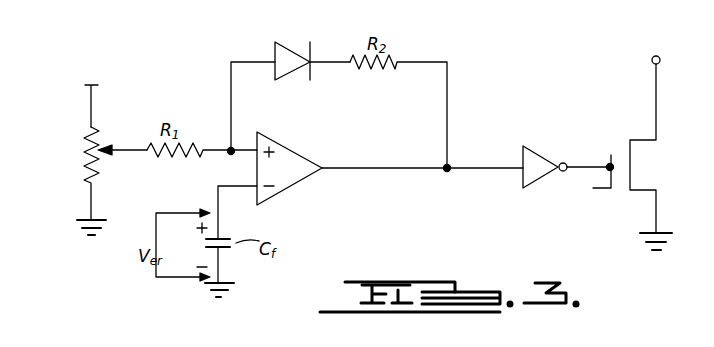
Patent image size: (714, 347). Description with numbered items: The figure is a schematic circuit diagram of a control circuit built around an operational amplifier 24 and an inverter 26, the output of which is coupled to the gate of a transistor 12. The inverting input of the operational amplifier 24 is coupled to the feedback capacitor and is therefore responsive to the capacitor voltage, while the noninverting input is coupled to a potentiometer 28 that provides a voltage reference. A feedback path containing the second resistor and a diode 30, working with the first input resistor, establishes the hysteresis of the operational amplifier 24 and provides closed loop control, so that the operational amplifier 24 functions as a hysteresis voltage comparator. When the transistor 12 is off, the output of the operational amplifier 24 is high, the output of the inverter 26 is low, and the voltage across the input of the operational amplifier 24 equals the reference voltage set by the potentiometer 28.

The transistor 12 is at (620, 155).
The operational amplifier 24 is at (298, 177).
The inverter 26 is at (538, 158).
The potentiometer 28 is at (86, 141).
The diode 30 is at (287, 66).